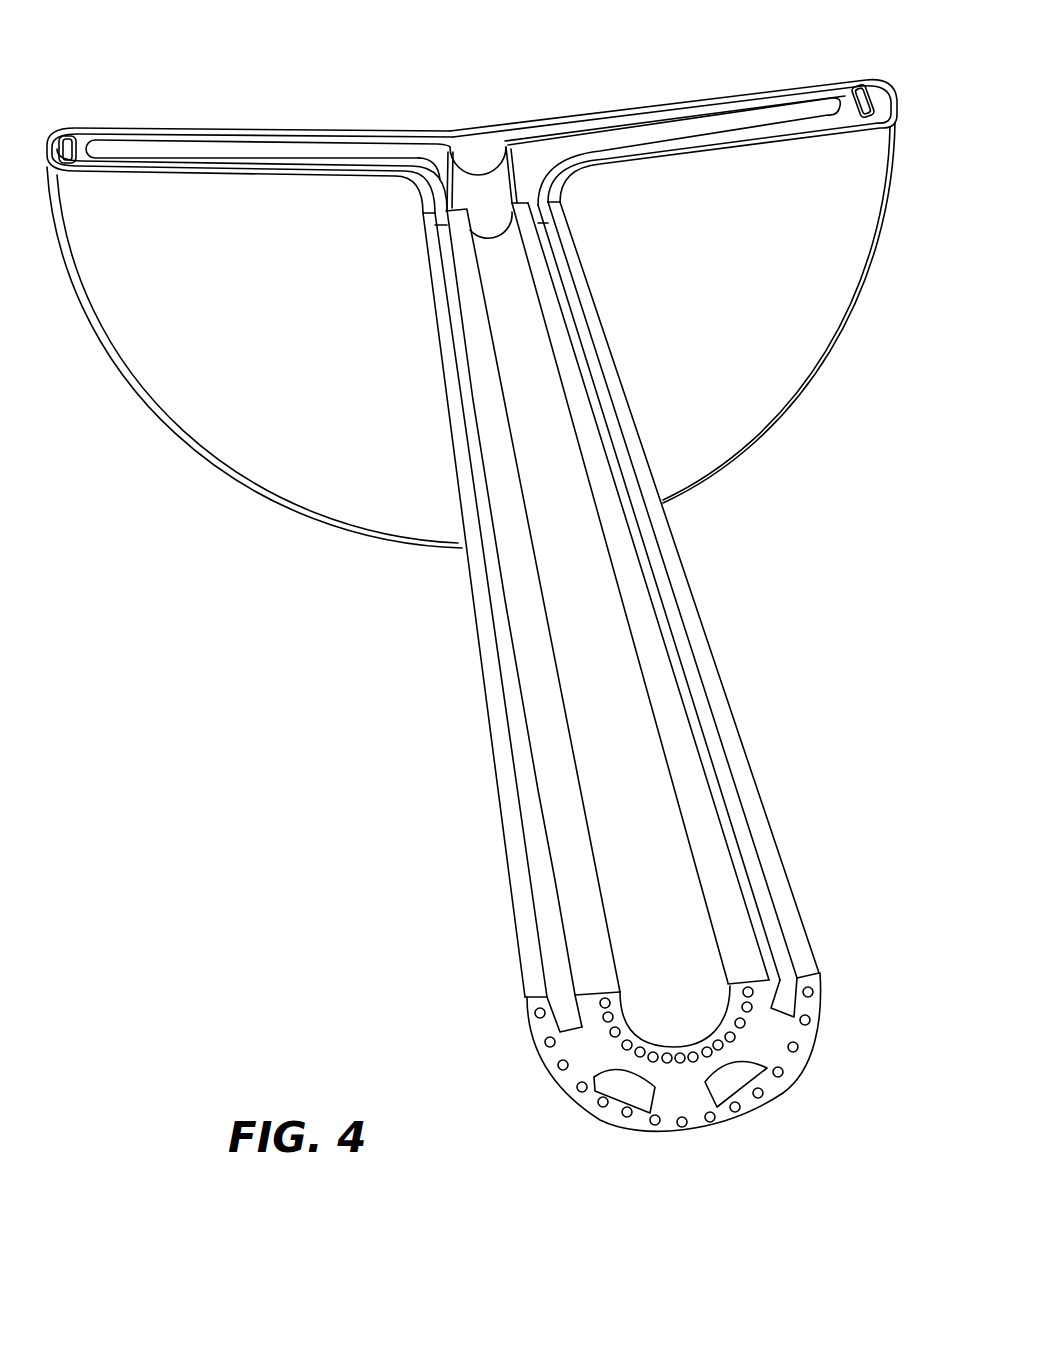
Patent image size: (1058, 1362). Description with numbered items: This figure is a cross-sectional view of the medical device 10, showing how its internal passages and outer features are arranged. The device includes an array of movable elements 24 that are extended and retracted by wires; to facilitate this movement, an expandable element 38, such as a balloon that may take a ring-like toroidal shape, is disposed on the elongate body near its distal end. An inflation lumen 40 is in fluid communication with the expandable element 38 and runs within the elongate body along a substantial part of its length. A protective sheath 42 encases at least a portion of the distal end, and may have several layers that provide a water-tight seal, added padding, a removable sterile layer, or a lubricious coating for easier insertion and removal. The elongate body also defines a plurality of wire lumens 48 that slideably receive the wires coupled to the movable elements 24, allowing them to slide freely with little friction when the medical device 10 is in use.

The medical device 10 is at (242, 764).
The array of movable elements 24 is at (72, 135).
The expandable element 38 is at (447, 150).
The inflation lumen 40 is at (783, 1012).
The protective sheath 42 is at (174, 432).
The wire lumens 48 is at (580, 1092).